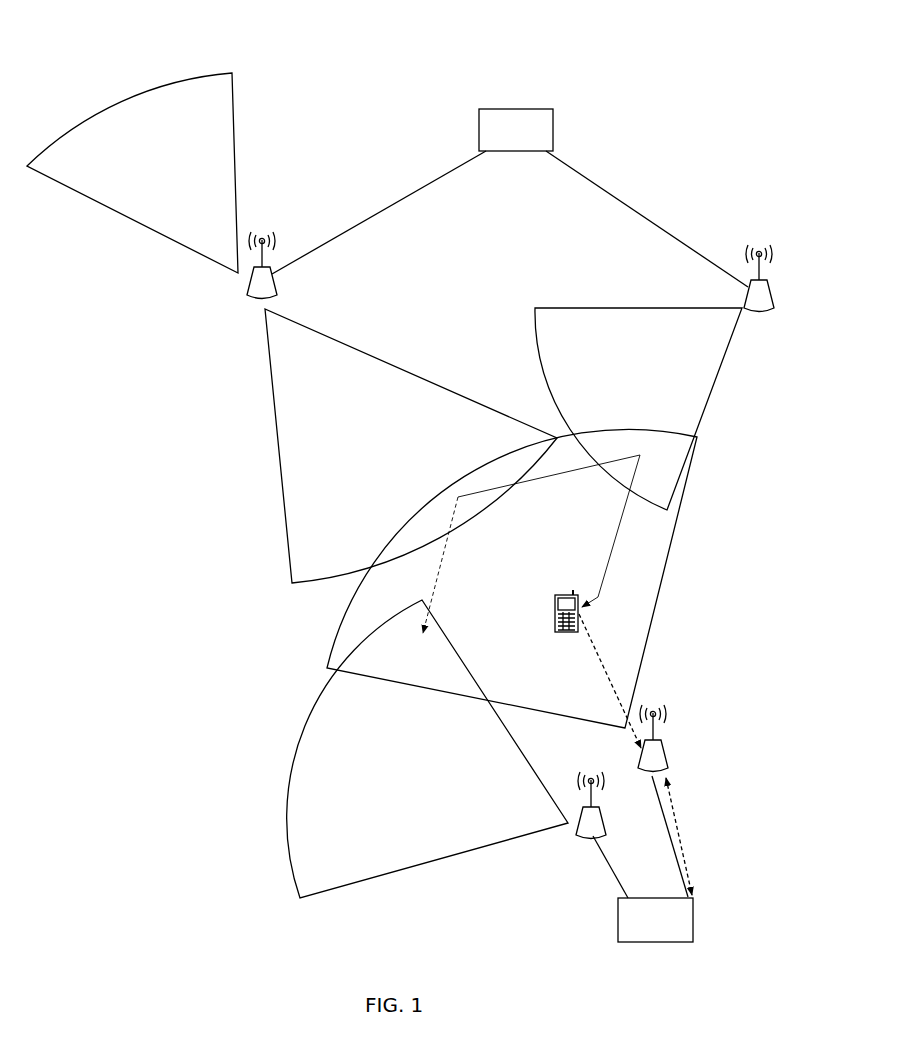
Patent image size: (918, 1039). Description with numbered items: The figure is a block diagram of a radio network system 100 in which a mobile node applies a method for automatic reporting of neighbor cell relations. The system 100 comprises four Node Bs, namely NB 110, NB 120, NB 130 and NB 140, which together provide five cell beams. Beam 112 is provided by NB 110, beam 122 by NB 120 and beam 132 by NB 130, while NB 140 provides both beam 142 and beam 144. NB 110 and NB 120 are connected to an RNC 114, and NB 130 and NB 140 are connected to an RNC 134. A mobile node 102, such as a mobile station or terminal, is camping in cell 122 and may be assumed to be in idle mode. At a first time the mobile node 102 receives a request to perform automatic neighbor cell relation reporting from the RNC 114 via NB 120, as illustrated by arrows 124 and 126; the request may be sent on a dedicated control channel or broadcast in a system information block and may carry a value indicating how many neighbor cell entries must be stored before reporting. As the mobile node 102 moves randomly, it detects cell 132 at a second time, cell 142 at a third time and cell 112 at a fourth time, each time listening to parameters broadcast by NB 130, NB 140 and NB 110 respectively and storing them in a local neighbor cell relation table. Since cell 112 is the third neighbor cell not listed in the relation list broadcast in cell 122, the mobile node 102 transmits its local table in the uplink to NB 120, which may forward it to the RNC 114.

The system 100 is at (100, 57).
The mobile node 102 is at (569, 634).
The NB 110 is at (608, 832).
The cell beam 112 is at (462, 858).
The RNC 114 is at (665, 944).
The NB 120 is at (672, 766).
The cell beam 122 is at (672, 545).
The arrow 124 is at (683, 841).
The arrow 126 is at (603, 648).
The NB 130 is at (768, 313).
The cell beam 132 is at (708, 405).
The RNC 134 is at (512, 108).
The NB 140 is at (279, 292).
The cell beam 142 is at (278, 402).
The cell beam 144 is at (148, 233).